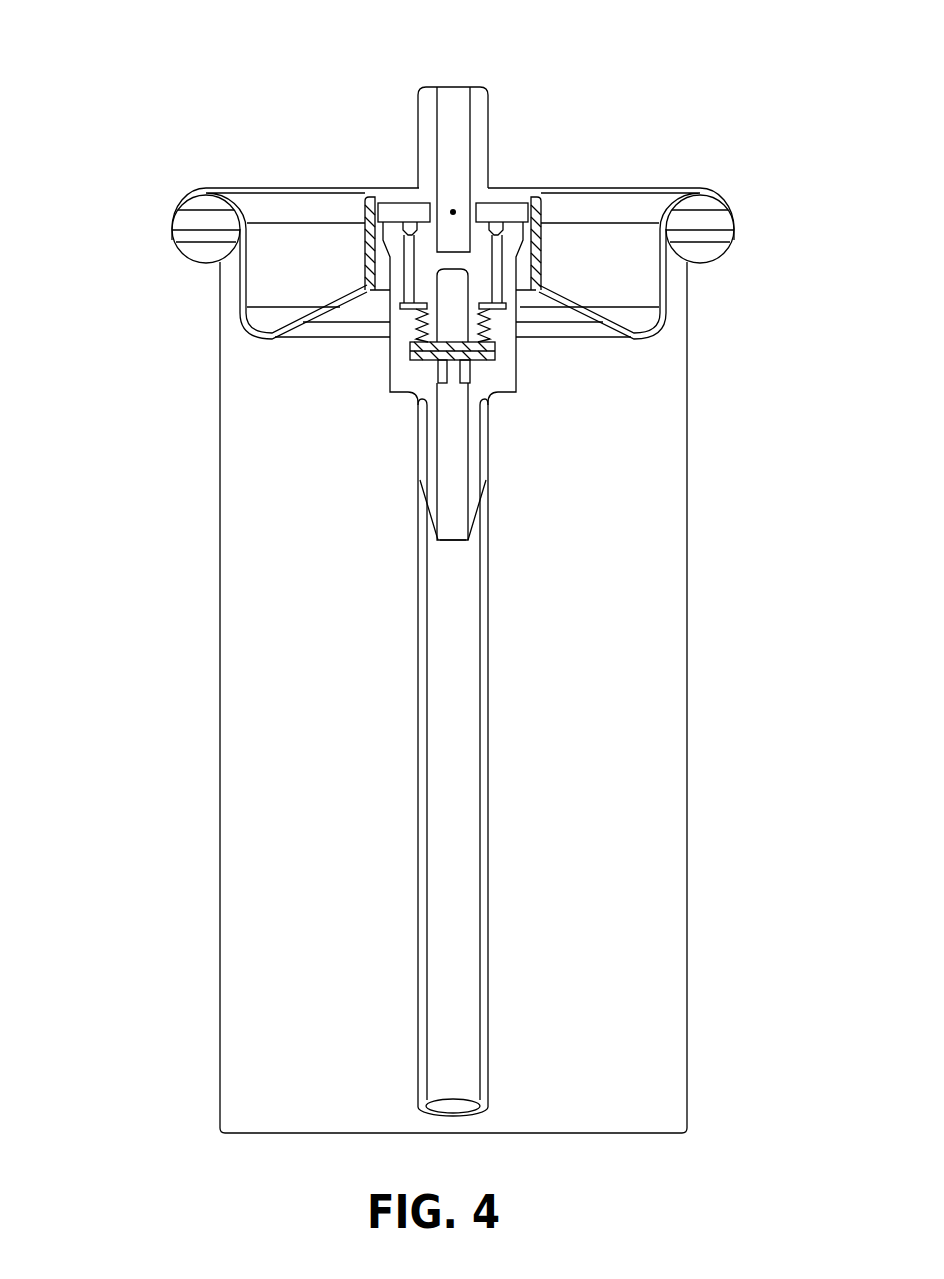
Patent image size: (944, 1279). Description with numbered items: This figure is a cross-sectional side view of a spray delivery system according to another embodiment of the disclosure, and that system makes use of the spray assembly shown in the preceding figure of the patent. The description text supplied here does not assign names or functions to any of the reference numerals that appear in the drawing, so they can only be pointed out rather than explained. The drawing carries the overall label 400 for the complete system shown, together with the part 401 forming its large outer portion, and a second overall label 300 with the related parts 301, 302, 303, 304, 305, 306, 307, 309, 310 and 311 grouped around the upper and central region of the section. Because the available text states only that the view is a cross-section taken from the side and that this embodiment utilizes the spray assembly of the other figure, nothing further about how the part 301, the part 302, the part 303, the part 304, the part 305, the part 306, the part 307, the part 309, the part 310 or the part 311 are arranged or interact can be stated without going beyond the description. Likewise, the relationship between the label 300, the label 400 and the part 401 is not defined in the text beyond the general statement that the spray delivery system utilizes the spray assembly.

The valve assembly 300 is at (688, 148).
The lid 301 is at (272, 198).
The stem 302 is at (453, 87).
The stem passage 303 is at (453, 212).
The fitting 304 is at (407, 210).
The housing 305 is at (495, 380).
The spring 306 is at (508, 335).
The seal plate 307 is at (420, 335).
The valve stem 309 is at (455, 485).
The valve stem tip 310 is at (455, 540).
The dip tube 311 is at (488, 832).
The container assembly 400 is at (97, 108).
The container body 401 is at (220, 841).